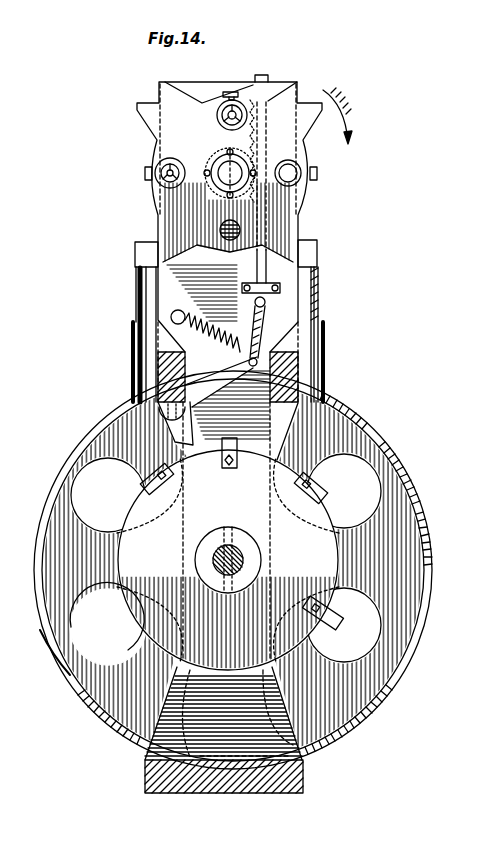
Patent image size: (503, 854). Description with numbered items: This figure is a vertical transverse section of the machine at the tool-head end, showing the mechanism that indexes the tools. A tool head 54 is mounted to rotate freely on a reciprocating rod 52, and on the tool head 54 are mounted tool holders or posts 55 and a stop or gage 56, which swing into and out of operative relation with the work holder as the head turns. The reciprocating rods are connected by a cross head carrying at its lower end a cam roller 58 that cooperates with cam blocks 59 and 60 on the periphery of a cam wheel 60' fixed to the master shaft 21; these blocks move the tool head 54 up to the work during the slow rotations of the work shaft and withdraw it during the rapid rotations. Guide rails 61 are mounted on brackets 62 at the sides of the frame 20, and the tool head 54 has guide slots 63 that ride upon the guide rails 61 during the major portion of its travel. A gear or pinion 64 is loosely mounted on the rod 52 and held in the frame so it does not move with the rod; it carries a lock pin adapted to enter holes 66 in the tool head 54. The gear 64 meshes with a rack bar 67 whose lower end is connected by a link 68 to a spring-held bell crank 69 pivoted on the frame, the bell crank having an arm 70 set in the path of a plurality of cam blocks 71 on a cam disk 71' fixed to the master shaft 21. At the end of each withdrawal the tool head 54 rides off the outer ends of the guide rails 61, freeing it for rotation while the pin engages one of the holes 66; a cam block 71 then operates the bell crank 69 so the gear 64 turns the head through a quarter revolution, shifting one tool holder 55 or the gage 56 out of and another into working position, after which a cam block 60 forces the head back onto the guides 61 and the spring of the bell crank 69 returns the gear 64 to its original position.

The frame 20 is at (257, 690).
The master shaft 21 is at (262, 559).
The reciprocating rod 52 is at (252, 168).
The tool head 54 is at (348, 146).
The tool holders or posts 55 is at (226, 100).
The stop or gage 56 is at (238, 228).
The cam roller 58 is at (131, 342).
The cam block 59 is at (329, 393).
The cam block 60 is at (250, 572).
The cam wheel 60' is at (55, 669).
The guide rails 61 is at (140, 255).
The brackets 62 is at (312, 303).
The guide slots 63 is at (140, 103).
The gear or pinion 64 is at (136, 331).
The holes 66 is at (232, 151).
The rack bar 67 is at (255, 279).
The link 68 is at (262, 314).
The bell crank 69 is at (250, 371).
The arm 70 is at (186, 429).
The cam blocks 71 is at (253, 541).
The cam disk 71' is at (107, 616).